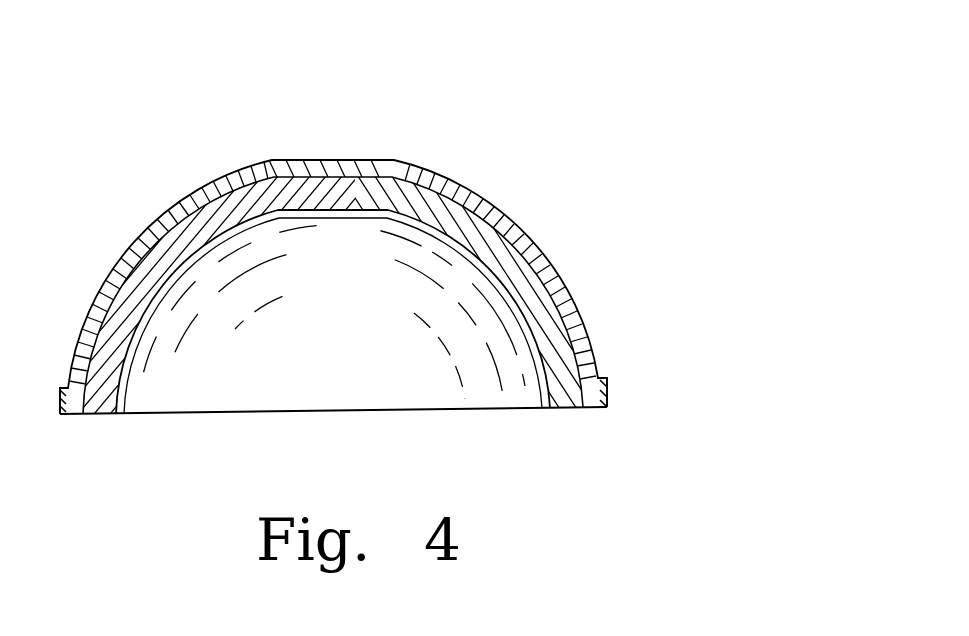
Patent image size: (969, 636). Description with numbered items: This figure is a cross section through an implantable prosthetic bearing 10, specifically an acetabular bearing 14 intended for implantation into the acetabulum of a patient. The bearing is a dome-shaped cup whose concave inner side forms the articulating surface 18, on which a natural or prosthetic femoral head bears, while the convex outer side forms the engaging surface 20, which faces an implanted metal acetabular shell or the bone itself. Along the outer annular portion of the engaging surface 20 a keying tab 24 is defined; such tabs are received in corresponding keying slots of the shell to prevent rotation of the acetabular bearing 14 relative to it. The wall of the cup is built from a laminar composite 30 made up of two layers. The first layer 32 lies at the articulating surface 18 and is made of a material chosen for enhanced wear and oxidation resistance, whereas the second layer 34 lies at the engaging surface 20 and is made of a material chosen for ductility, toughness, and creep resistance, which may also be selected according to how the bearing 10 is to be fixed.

The implantable prosthetic bearing 10 is at (559, 114).
The acetabular bearing 14 is at (556, 206).
The articulating surface 18 is at (546, 354).
The engaging surface 20 is at (604, 380).
The keying tab 24 is at (608, 405).
The laminar composite 30 is at (398, 147).
The first layer 32 is at (97, 414).
The second layer 34 is at (132, 249).